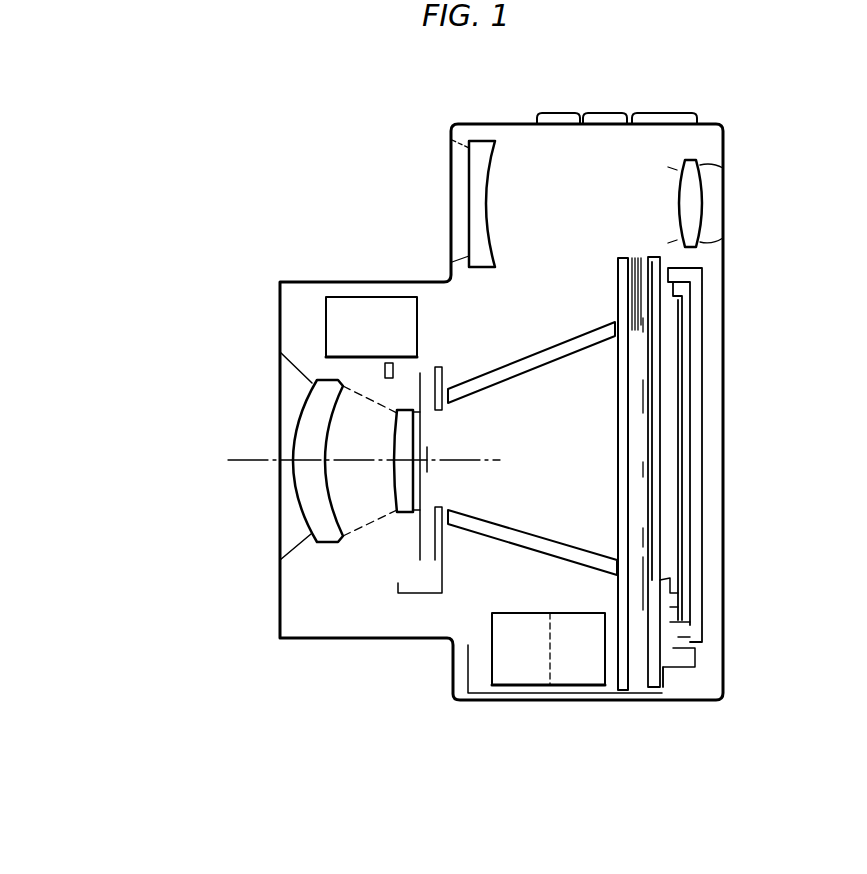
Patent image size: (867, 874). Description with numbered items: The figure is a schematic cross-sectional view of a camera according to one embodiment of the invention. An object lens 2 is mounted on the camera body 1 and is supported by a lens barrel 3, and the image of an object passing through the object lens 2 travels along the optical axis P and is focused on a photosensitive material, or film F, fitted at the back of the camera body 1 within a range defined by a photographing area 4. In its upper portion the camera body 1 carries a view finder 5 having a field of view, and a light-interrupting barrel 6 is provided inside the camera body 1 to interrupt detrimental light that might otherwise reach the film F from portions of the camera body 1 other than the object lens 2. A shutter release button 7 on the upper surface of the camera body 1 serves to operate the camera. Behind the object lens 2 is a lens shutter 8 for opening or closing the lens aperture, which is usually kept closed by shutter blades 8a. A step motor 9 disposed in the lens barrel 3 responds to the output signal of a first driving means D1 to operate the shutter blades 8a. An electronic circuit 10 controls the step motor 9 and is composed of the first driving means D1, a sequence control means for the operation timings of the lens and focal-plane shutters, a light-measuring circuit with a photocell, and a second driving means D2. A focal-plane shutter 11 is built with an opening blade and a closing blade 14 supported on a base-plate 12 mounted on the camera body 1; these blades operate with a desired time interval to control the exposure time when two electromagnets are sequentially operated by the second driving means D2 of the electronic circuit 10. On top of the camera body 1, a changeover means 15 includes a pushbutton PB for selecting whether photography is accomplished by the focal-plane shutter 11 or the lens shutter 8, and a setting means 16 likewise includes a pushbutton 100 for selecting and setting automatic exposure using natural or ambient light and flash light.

The camera body 1 is at (463, 710).
The object lens 2 is at (300, 487).
The lens barrel 3 is at (305, 280).
The photographing area 4 is at (653, 580).
The view finder 5 is at (460, 210).
The light-interrupting barrel 6 is at (494, 375).
The shutter release button 7 is at (550, 112).
The lens shutter 8 is at (397, 598).
The shutter blades 8a is at (430, 478).
The step motor 9 is at (372, 303).
The electronic circuit 10 is at (512, 612).
The focal-plane shutter 11 is at (637, 400).
The base-plate 12 is at (657, 677).
The closing blade 14 is at (633, 258).
The changeover means 15 is at (660, 112).
The setting means 16 is at (620, 112).
The pushbutton 100 is at (590, 112).
The pushbutton PB is at (693, 113).
The optical axis P is at (240, 458).
The photosensitive material F is at (672, 467).
The first driving means D1 is at (527, 680).
The second driving means D2 is at (590, 680).